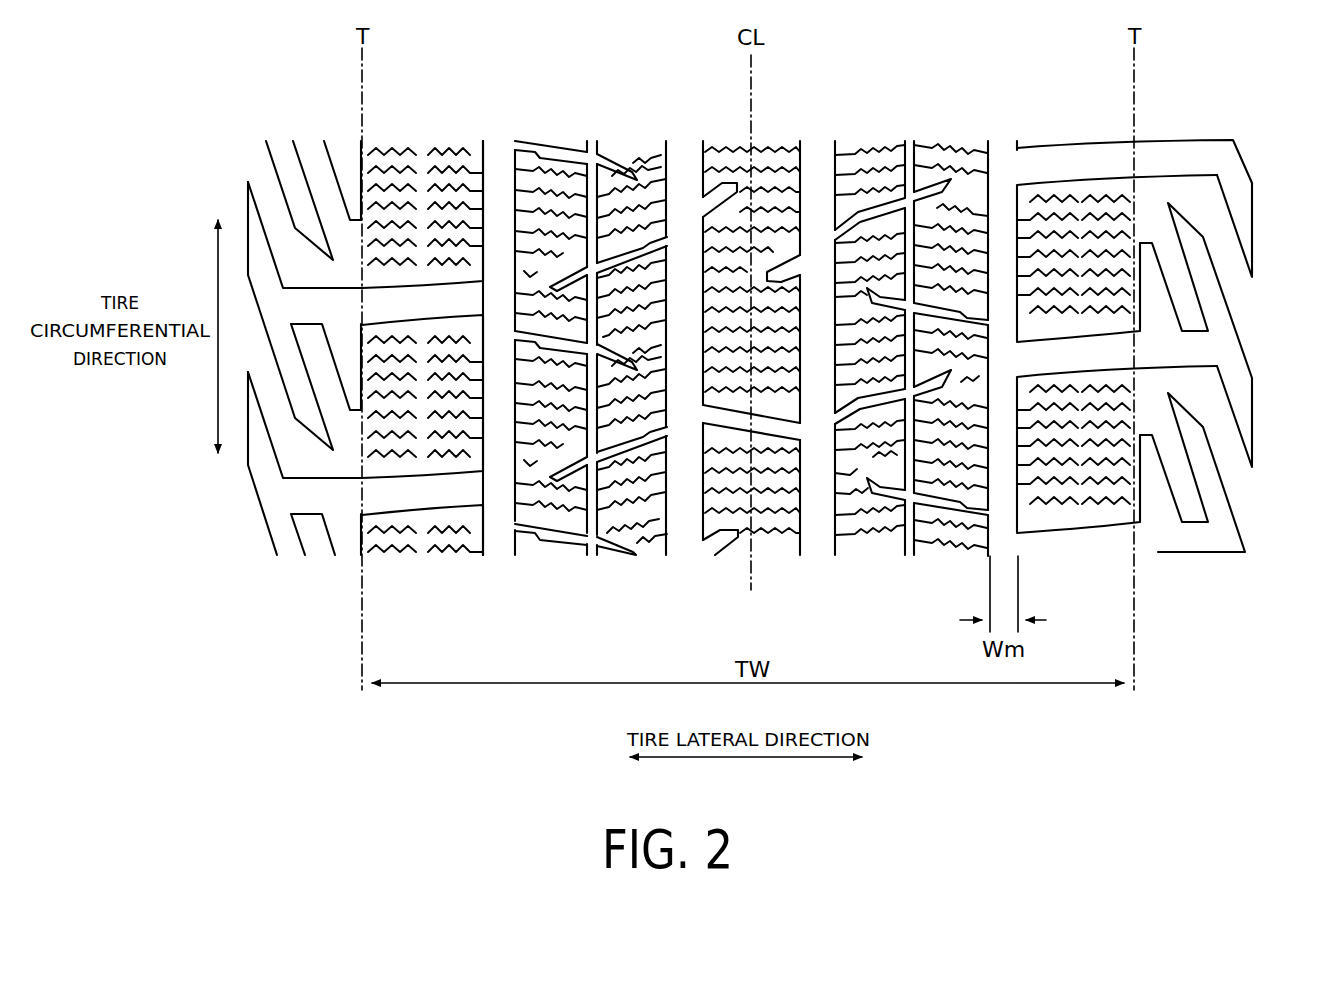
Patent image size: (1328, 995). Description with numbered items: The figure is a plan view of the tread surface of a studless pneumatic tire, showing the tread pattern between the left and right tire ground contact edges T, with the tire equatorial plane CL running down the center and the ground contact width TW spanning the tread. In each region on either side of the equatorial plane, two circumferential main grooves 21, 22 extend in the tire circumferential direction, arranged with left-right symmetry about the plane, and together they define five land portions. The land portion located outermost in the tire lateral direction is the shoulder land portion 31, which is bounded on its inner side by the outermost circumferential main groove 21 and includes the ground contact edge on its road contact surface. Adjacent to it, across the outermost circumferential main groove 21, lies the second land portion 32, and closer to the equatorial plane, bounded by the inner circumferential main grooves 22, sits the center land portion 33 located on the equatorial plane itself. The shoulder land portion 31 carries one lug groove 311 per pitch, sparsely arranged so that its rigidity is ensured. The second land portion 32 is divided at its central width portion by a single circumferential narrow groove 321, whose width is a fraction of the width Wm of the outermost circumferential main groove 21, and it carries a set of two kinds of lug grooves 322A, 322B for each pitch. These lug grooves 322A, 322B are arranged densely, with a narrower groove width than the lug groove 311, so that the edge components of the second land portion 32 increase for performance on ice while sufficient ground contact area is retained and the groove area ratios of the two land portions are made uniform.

The outermost circumferential main groove 21 is at (494, 148).
The circumferential main groove 22 is at (687, 152).
The shoulder land portion 31 is at (426, 134).
The lug groove 311 is at (1217, 158).
The second land portion 32 is at (560, 133).
The circumferential narrow groove 321 is at (589, 137).
The lug groove 322A is at (943, 190).
The lug groove 322B is at (880, 297).
The center land portion 33 is at (759, 133).